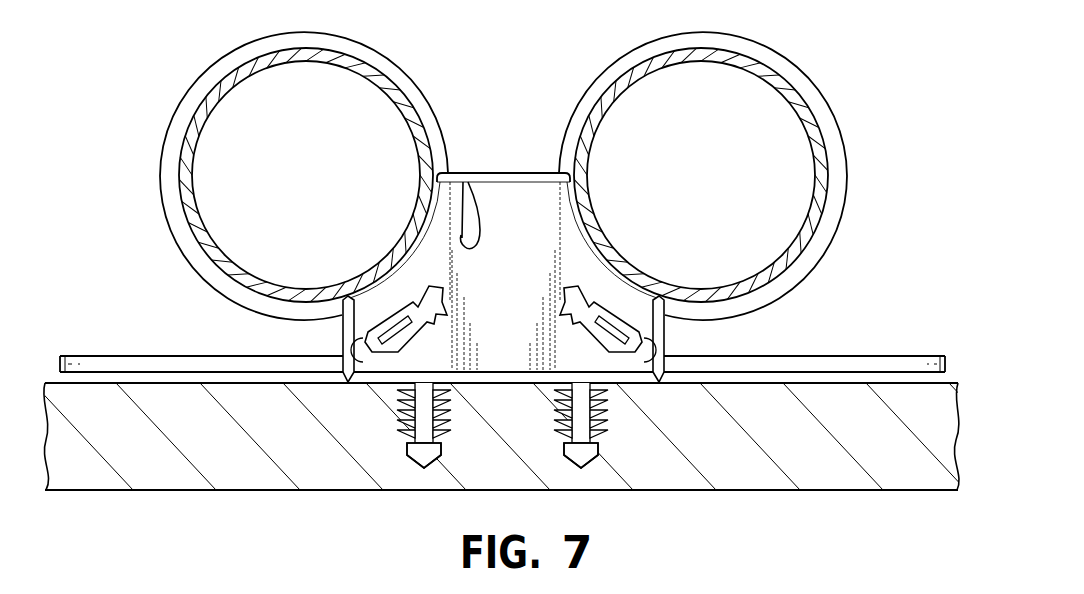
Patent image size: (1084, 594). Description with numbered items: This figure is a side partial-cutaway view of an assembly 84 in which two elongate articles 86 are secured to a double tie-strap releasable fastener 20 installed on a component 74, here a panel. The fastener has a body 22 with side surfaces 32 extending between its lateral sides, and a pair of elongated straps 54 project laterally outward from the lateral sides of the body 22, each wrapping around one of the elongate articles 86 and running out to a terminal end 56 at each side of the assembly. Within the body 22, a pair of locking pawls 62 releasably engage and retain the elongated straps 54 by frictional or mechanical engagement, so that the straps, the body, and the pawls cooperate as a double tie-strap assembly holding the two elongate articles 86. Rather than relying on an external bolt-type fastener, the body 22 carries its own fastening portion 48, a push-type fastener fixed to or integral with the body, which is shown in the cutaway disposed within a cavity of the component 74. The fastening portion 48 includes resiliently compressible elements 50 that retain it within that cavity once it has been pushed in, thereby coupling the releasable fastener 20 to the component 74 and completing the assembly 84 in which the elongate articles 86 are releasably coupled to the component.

The assembly 84 is at (147, 54).
The elongate article 86 is at (350, 70).
The releasable fastener 20 is at (485, 173).
The body 22 is at (528, 182).
The side surfaces 32 is at (464, 173).
The locking pawl 62 is at (345, 328).
The elongated strap 54 is at (217, 288).
The terminal end 56 is at (80, 356).
The fastening portion 48 is at (395, 430).
The resiliently compressible elements 50 is at (465, 480).
The component 74 is at (760, 490).